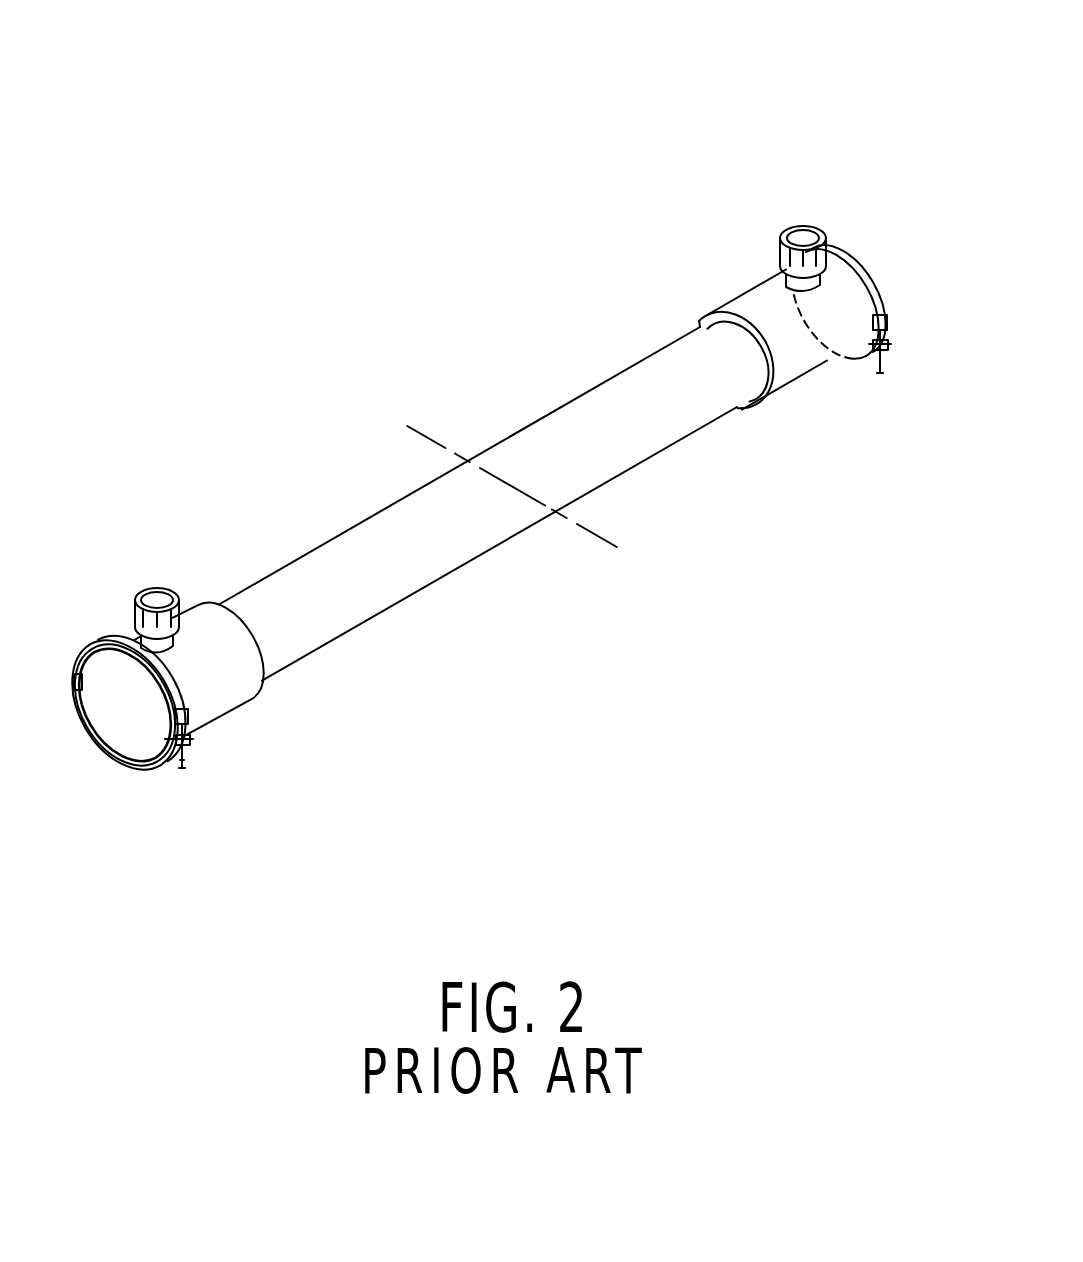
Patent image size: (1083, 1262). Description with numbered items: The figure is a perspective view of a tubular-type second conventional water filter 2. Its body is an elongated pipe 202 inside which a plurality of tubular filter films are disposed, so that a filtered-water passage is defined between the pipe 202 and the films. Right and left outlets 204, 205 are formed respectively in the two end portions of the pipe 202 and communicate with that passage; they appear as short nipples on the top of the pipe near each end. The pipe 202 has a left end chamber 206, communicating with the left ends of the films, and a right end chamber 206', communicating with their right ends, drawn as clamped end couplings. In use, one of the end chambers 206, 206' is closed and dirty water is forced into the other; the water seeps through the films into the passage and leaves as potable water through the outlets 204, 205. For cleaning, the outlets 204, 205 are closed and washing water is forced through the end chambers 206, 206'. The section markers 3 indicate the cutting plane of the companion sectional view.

The second conventional water filter 2 is at (311, 517).
The pipe 202 is at (677, 368).
The right outlet 204 is at (805, 238).
The left outlet 205 is at (157, 598).
The left end chamber 206 is at (127, 787).
The right end chamber 206' is at (864, 216).
The section line 3- 3 is at (627, 542).